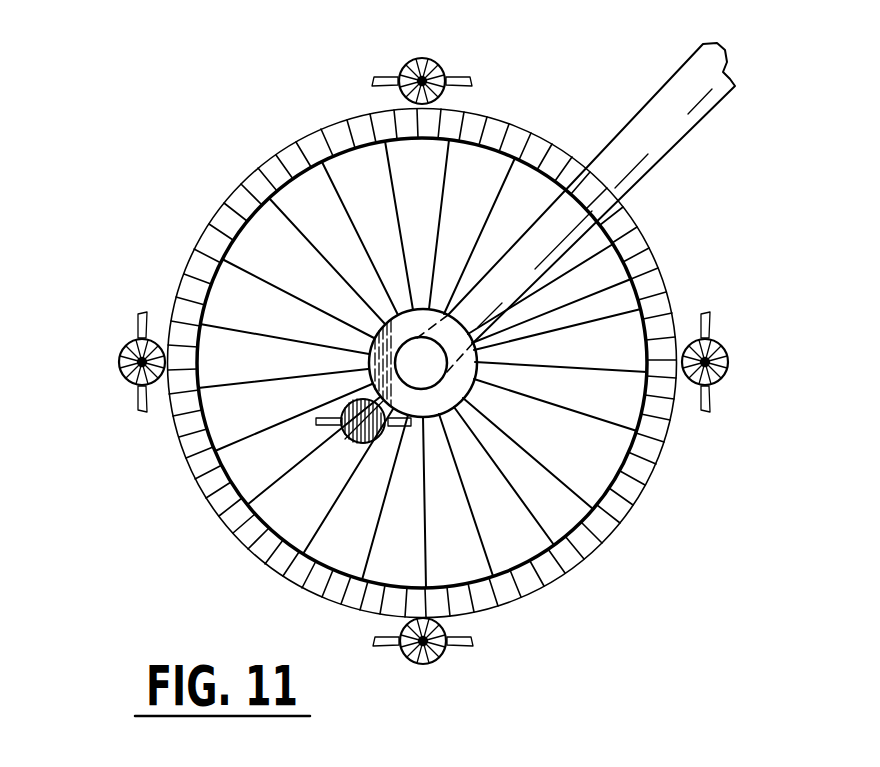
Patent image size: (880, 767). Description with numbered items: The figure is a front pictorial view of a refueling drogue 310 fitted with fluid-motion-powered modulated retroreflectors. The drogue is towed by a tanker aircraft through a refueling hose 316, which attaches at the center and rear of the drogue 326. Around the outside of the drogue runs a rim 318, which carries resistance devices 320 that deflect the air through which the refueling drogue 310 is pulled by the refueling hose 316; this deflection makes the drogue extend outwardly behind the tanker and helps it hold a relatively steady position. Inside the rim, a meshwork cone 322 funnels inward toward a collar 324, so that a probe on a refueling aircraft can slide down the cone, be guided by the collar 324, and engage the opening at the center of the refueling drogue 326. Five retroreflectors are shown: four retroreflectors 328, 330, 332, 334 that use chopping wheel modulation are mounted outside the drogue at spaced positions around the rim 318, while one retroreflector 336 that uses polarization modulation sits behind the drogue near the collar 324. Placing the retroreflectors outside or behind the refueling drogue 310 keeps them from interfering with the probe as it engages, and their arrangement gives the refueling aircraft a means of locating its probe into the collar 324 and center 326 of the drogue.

The refueling drogue 310 is at (512, 118).
The refueling hose 316 is at (675, 90).
The rim 318 is at (598, 545).
The resistance devices 320 is at (640, 462).
The meshwork cone 322 is at (268, 489).
The collar 324 is at (437, 394).
The center of the refueling drogue 326 is at (635, 278).
The fluid-motion-powered modulated retroreflector 328 is at (437, 57).
The fluid-motion-powered modulated retroreflector 330 is at (120, 340).
The fluid-motion-powered modulated retroreflector 332 is at (437, 654).
The fluid-motion-powered modulated retroreflector 334 is at (712, 340).
The fluid-motion-powered modulated retroreflector 336 is at (349, 441).